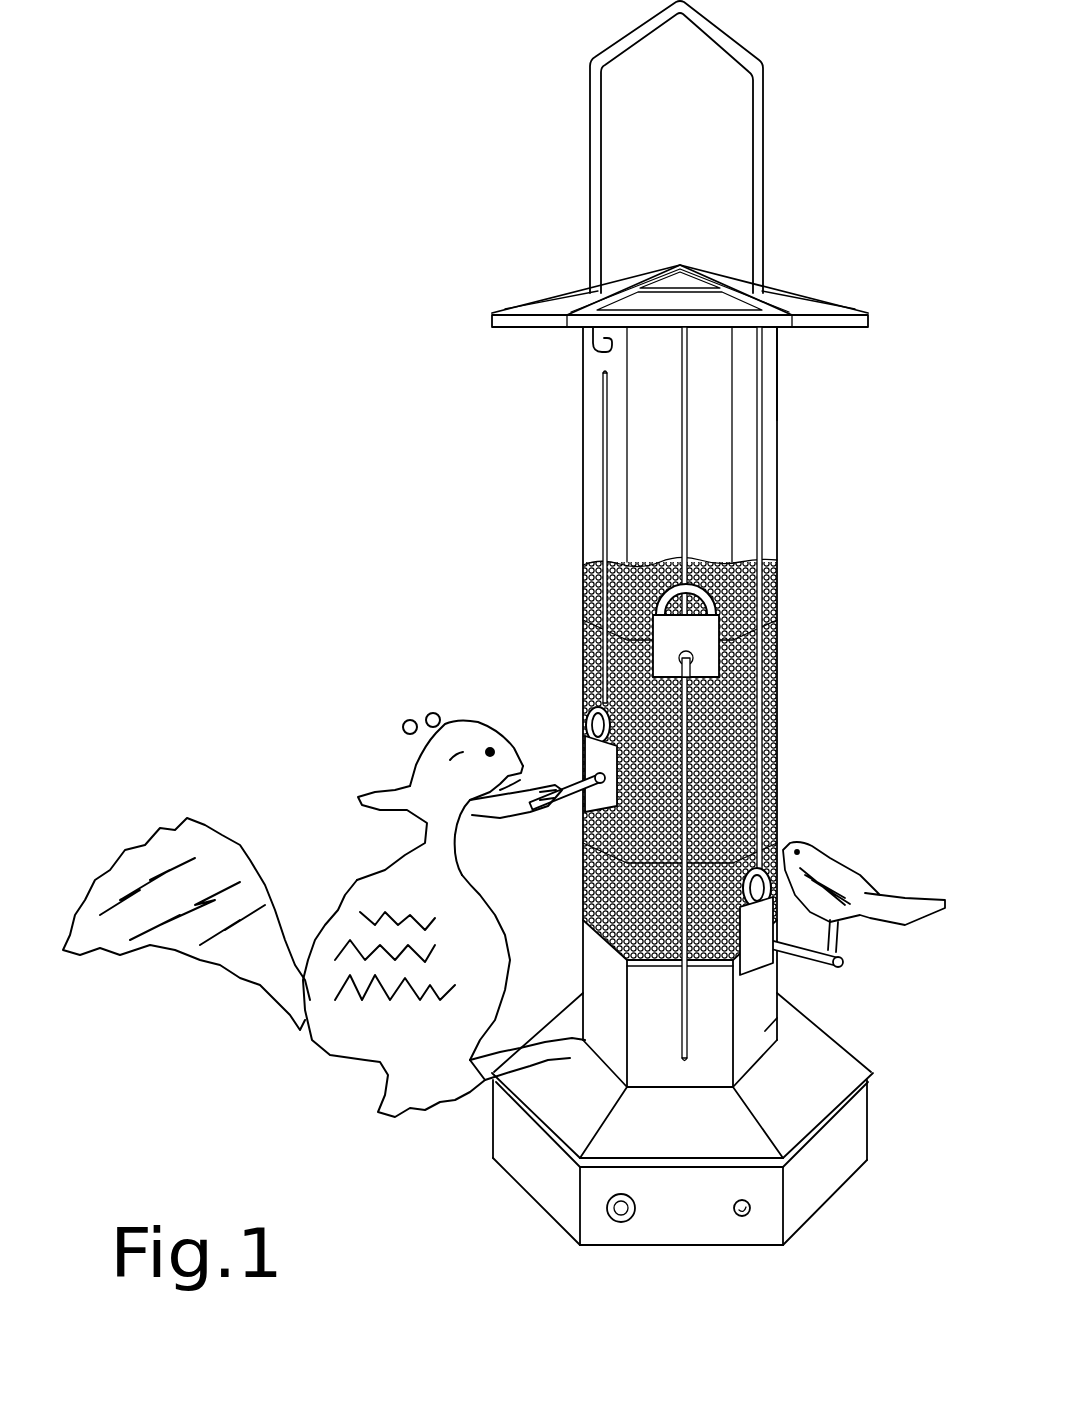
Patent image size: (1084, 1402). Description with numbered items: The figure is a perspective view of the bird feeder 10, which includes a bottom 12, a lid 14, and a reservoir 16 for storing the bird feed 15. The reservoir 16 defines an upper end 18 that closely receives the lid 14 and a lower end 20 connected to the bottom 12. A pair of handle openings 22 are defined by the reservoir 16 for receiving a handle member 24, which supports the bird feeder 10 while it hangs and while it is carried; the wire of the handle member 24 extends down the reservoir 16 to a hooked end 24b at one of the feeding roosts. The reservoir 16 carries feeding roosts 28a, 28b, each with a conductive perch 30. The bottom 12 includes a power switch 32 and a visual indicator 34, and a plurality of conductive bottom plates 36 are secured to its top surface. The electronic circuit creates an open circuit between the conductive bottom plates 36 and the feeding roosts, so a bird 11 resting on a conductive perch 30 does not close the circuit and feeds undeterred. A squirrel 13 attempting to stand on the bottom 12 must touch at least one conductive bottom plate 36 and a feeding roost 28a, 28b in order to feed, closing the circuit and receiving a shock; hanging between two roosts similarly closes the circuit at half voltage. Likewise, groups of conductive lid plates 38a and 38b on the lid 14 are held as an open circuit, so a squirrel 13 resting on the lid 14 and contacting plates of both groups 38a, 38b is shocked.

The bird feeder 10 is at (448, 190).
The bird 11 is at (830, 877).
The bottom 12 is at (835, 1153).
The squirrel 13 is at (372, 803).
The lid 14 is at (876, 315).
The bird feed 15 is at (757, 720).
The reservoir 16 is at (775, 503).
The upper end 18 is at (746, 578).
The lower end 20 is at (788, 346).
The handle openings 22 is at (601, 367).
The handle member 24 is at (762, 62).
The wire hook end 24b is at (773, 912).
The feed port 28a is at (712, 652).
The feed port 28b is at (586, 760).
The conductive perch 30 is at (574, 778).
The power switch 32 is at (617, 1223).
The visual indicator 34 is at (741, 1217).
The conductive bottom plates 36 is at (510, 1100).
The conductive lid plates 38a is at (714, 302).
The conductive lid plates 38b is at (662, 286).